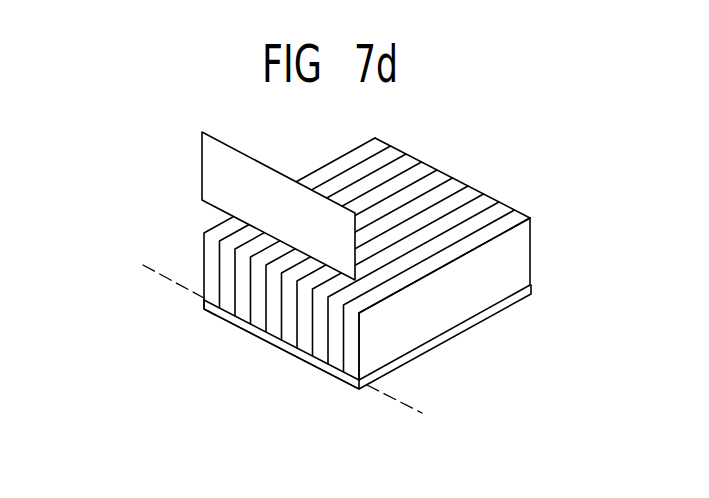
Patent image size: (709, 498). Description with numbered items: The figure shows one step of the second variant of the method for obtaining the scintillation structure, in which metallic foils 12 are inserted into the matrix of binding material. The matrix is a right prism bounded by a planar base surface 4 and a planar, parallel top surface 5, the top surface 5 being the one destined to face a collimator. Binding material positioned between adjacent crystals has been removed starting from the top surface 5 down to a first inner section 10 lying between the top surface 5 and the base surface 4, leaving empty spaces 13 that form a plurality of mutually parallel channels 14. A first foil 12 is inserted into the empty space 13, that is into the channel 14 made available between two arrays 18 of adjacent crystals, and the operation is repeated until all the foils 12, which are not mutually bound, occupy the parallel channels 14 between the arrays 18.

The base surface 4 is at (312, 375).
The top surface 5 is at (485, 191).
The first inner section 10 is at (400, 403).
The metallic foil 12 is at (384, 224).
The empty space 13 is at (351, 388).
The channel 14 is at (205, 299).
The array 18 is at (471, 293).